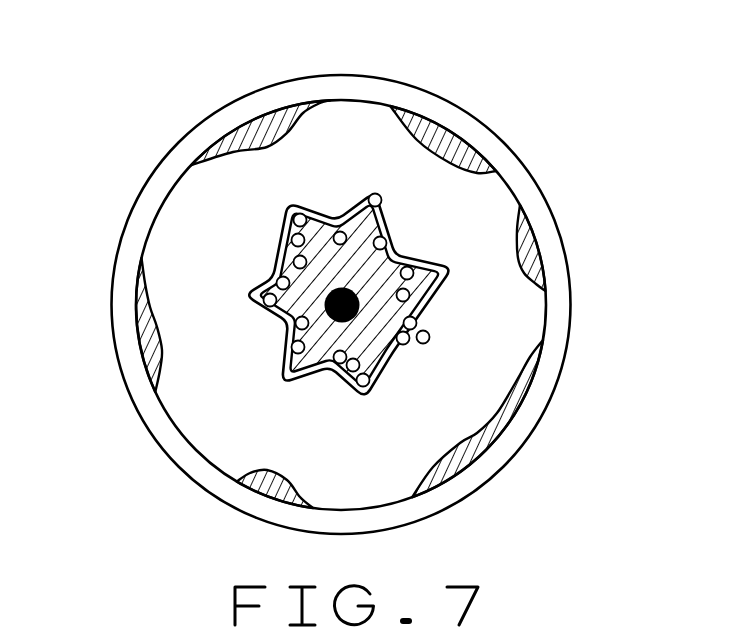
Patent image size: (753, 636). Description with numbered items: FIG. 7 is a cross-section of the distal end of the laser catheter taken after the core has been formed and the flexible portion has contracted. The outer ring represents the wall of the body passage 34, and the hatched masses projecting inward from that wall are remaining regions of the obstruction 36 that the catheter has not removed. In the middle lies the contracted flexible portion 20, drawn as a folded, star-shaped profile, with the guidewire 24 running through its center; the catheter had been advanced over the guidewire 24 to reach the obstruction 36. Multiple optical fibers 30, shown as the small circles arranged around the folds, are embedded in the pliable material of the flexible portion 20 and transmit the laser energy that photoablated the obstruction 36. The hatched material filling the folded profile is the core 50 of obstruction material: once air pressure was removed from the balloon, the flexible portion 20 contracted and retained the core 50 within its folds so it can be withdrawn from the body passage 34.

The flexible portion 20 is at (335, 254).
The guidewire 24 is at (287, 387).
The optical fibers 30 is at (377, 197).
The body passage 34 is at (188, 233).
The obstruction 36 is at (253, 137).
The core 50 is at (393, 225).